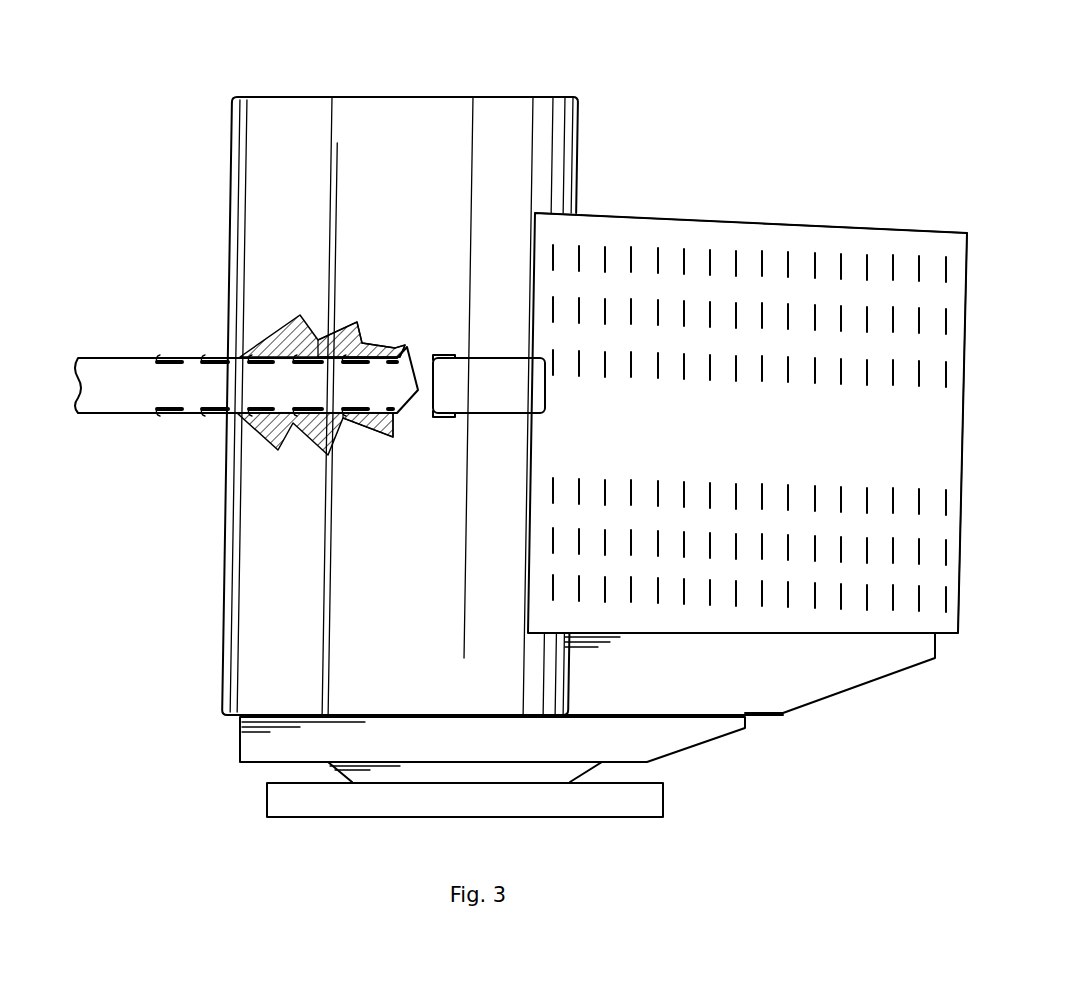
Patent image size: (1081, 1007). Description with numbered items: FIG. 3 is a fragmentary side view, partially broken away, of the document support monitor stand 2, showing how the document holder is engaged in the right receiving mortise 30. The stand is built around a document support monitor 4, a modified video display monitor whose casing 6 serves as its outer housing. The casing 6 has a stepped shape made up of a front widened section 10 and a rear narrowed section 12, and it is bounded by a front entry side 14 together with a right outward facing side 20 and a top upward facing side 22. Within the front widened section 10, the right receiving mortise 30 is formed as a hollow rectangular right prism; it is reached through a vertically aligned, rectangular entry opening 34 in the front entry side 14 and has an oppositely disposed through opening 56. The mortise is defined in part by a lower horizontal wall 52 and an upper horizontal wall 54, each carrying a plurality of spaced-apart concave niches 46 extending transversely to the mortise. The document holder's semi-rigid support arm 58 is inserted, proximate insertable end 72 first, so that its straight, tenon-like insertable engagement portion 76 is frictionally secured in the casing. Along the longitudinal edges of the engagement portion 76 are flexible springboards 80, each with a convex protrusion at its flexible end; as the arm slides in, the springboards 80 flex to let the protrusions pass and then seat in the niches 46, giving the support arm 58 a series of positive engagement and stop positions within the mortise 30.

The document support monitor stand 2 is at (573, 65).
The document support monitor 4 is at (592, 192).
The casing 6 is at (846, 704).
The front widened section 10 is at (398, 156).
The rear narrowed section 12 is at (746, 445).
The front entry side 14 is at (240, 212).
The right outward facing side 20 is at (935, 443).
The top upward facing side 22 is at (795, 222).
The right receiving mortise 30 is at (372, 337).
The entry opening 34 is at (233, 417).
The concave niches 46 is at (343, 422).
The lower horizontal wall 52 is at (268, 450).
The upper horizontal wall 54 is at (283, 335).
The through opening 56 is at (440, 419).
The semi-rigid support arm 58 is at (236, 384).
The proximate insertable end 72 is at (546, 388).
The insertable engagement portion 76 is at (220, 401).
The flexible springboards 80 is at (160, 357).